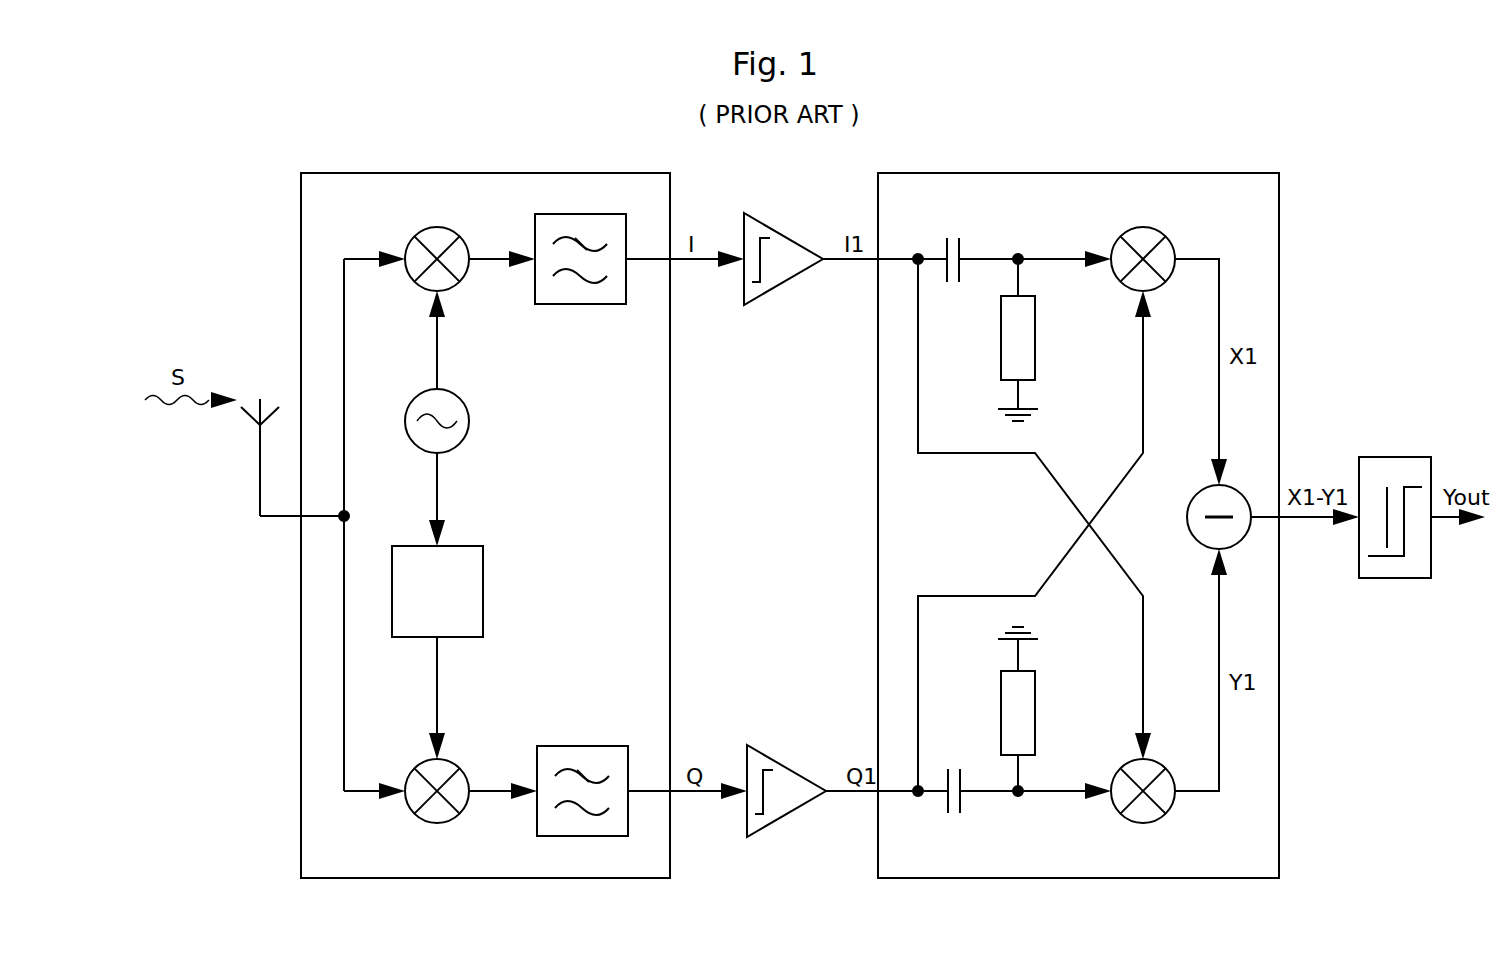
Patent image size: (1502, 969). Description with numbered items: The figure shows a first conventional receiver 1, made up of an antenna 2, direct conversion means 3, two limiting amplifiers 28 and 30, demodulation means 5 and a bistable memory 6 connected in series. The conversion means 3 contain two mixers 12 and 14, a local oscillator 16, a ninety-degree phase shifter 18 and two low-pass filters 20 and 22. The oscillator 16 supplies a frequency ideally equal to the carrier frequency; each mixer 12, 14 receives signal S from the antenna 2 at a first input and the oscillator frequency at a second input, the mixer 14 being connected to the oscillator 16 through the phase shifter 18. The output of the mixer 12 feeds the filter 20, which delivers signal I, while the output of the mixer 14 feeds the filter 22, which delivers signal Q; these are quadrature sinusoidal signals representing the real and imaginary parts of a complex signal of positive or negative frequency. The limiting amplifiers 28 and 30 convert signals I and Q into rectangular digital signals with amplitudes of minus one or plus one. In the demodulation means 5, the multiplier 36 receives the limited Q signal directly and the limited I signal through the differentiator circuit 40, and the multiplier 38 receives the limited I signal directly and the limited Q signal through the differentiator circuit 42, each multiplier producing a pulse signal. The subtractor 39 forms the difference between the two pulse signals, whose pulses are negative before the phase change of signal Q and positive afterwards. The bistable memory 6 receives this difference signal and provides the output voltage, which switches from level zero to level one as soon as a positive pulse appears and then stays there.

The receiver 1 is at (585, 132).
The antenna 2 is at (258, 478).
The direct conversion means 3 is at (373, 152).
The demodulation means 5 is at (990, 152).
The bistable memory 6 is at (1398, 568).
The mixer 12 is at (443, 238).
The mixer 14 is at (445, 773).
The local oscillator 16 is at (452, 403).
The phase shifter 18 is at (470, 566).
The low-pass filter 20 is at (569, 293).
The low-pass filter 22 is at (571, 762).
The limiting amplifier 28 is at (781, 248).
The limiting amplifier 30 is at (784, 781).
The multiplier 36 is at (1148, 236).
The multiplier 38 is at (1150, 770).
The subtractor 39 is at (1210, 500).
The differentiator circuit 40 is at (1062, 345).
The differentiator circuit 42 is at (1062, 705).